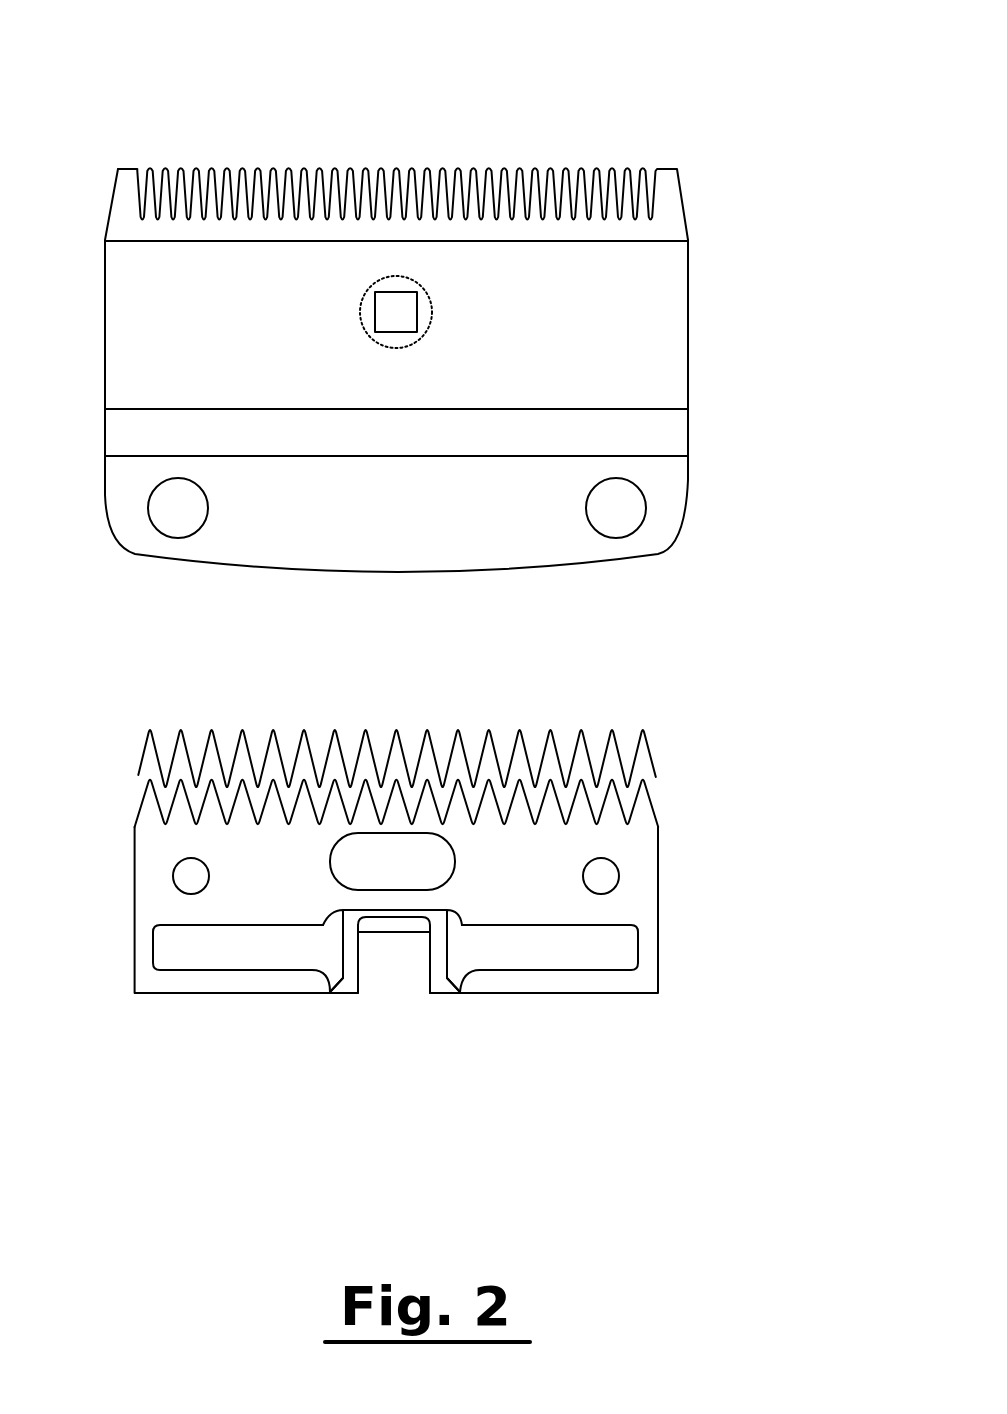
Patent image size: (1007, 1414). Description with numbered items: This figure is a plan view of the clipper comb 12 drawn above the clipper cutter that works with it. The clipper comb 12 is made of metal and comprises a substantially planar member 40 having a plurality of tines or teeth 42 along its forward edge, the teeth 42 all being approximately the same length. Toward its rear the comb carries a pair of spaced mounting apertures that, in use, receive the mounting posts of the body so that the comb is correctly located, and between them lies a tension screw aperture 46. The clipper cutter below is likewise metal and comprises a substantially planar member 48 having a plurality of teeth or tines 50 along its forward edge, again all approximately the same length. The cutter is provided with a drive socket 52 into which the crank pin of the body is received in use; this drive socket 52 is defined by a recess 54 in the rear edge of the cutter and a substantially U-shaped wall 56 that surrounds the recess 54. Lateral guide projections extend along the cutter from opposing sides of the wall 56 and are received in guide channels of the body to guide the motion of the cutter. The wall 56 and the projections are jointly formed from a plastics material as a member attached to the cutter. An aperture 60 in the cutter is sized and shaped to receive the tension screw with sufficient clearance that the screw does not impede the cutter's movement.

The clipper comb 12 is at (779, 200).
The planar member 40 is at (454, 294).
The teeth 42 is at (102, 176).
The tension screw aperture 46 is at (380, 308).
The planar member 48 is at (425, 886).
The teeth 50 is at (122, 737).
The drive socket 52 is at (392, 1044).
The recess 54 is at (387, 992).
The U-shaped wall 56 is at (437, 960).
The aperture 60 is at (442, 862).